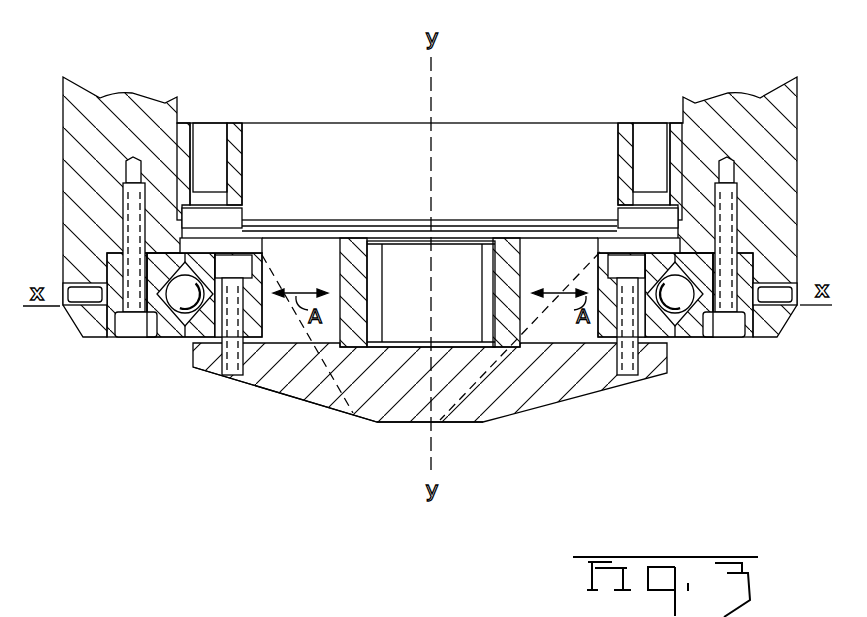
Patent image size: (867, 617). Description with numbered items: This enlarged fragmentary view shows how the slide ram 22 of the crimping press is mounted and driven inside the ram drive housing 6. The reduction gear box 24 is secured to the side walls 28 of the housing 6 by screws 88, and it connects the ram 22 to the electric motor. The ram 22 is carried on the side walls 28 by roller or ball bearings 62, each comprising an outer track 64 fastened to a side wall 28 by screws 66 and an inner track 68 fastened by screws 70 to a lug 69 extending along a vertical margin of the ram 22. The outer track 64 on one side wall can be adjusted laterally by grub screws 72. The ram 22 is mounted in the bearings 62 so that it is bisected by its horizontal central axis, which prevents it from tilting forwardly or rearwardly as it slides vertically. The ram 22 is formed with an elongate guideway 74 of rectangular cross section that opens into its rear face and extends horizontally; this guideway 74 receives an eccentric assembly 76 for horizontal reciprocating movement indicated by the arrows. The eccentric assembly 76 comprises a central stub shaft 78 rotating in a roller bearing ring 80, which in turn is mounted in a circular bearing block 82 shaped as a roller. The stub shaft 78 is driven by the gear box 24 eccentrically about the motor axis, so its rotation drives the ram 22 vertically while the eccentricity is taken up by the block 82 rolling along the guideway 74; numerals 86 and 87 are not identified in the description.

The ram drive housing 6 is at (525, 100).
The slide ram 22 is at (522, 425).
The reduction gear box 24 is at (336, 197).
The side walls 28 is at (82, 200).
The roller or ball bearings 62 is at (172, 372).
The outer tracks 64 is at (107, 328).
The screws 66 is at (143, 200).
The inner tracks 68 is at (229, 256).
The lugs 69 is at (197, 345).
The screws 70 is at (252, 263).
The grub screws 72 is at (775, 336).
The guideway 74 is at (540, 257).
The eccentric assembly 76 is at (518, 333).
The central stub shaft 78 is at (455, 258).
The roller bearing ring 80 is at (354, 412).
The bearing block 82 is at (342, 247).
The bottom face 86 is at (444, 450).
The inclined bottom face 87 is at (285, 449).
The screws 88 is at (210, 137).